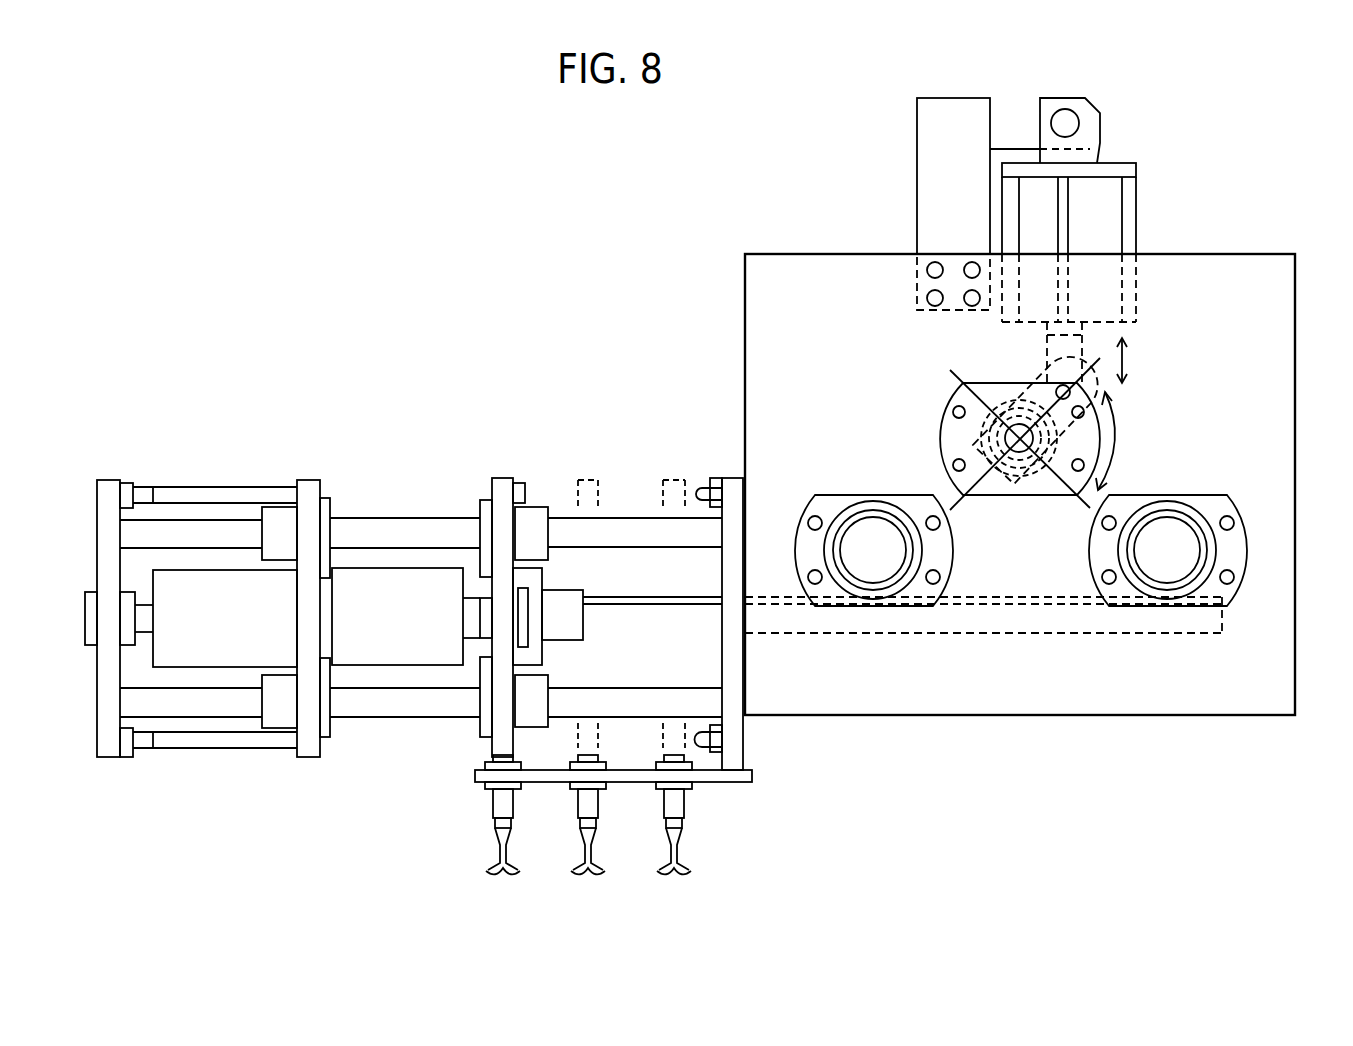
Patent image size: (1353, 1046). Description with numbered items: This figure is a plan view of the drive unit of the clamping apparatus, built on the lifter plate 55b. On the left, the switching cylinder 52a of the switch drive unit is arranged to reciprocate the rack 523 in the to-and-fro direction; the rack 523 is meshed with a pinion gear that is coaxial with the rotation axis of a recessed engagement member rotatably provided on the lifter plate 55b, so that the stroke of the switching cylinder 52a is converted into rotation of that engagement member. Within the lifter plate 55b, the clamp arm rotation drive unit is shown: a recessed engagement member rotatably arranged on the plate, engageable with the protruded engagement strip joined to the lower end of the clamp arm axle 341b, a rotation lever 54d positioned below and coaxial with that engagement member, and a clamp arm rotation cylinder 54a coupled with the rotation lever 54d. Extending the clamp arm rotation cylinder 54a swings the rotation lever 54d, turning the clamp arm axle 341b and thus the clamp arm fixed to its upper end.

The lifter plate 55b is at (755, 293).
The clamp arm rotation cylinder 54a is at (1101, 195).
The rotation lever 54d is at (1000, 383).
The clamp arm axle 341b is at (1019, 440).
The rack 523 is at (927, 623).
The switching cylinder 52a is at (231, 650).